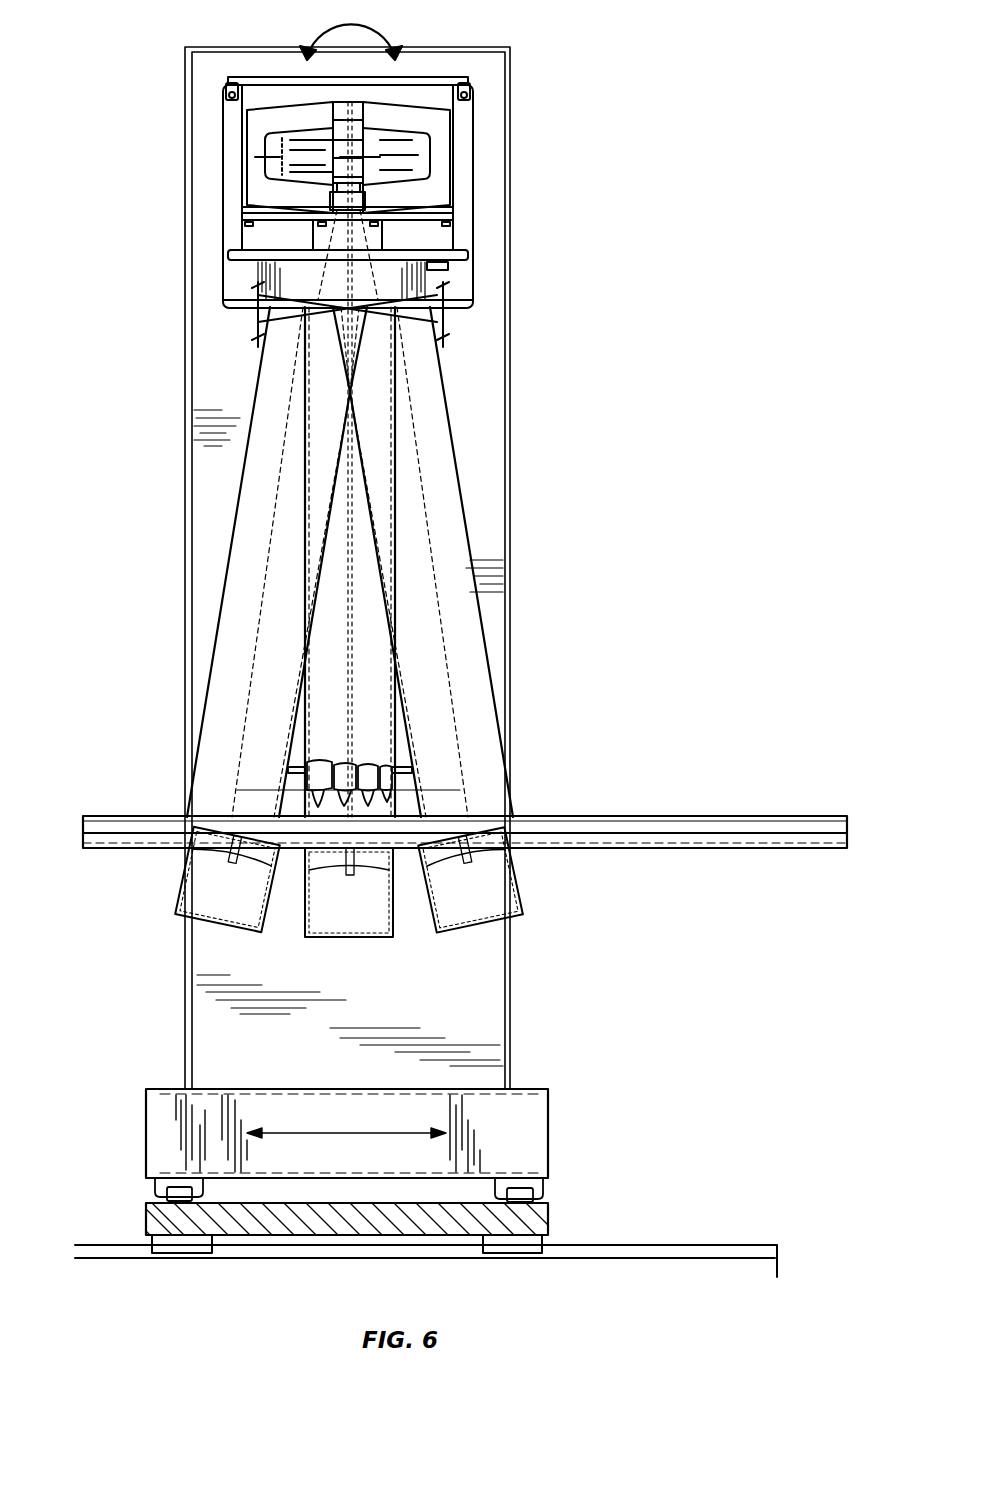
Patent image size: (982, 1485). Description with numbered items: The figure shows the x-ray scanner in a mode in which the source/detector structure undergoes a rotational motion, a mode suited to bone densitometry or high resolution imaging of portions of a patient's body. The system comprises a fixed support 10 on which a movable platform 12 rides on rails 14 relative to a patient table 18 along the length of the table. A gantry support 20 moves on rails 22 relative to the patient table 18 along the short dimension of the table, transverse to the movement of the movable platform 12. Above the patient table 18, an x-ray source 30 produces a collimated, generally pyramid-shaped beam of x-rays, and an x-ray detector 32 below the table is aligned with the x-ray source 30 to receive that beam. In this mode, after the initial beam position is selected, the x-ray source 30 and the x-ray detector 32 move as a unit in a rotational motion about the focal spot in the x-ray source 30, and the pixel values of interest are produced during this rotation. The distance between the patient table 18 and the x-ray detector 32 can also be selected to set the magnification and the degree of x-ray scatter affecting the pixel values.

The fixed support 10 is at (600, 1258).
The movable platform 12 is at (548, 1222).
The rails 14 is at (218, 1253).
The patient table 18 is at (670, 828).
The gantry support 20 is at (530, 1132).
The rails 22 is at (155, 1190).
The x-ray source 30 is at (420, 82).
The x-ray detector 32 is at (203, 902).